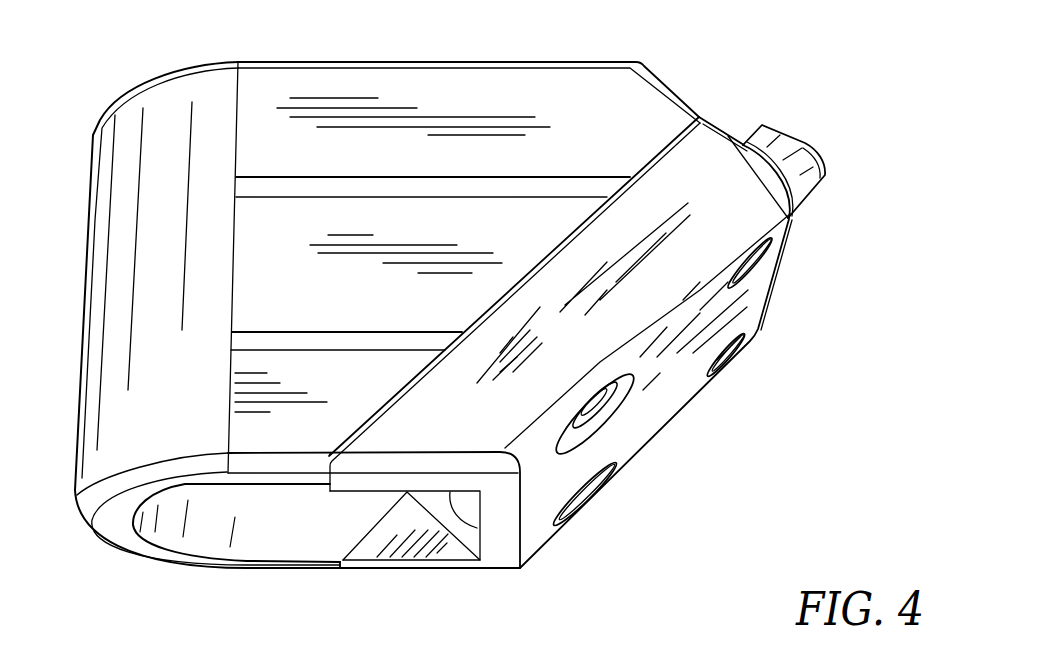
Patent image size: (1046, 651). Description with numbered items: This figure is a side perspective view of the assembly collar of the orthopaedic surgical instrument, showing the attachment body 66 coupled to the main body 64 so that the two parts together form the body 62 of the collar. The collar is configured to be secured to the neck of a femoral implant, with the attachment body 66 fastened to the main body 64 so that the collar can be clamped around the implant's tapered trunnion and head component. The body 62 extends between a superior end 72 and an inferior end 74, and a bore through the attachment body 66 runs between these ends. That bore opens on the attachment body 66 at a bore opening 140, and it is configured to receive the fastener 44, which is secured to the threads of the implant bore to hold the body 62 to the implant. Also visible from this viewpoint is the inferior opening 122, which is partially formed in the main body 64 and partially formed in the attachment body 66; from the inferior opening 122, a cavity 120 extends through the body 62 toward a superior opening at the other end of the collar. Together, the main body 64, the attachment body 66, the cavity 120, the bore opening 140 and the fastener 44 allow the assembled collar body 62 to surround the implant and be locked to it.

The superior end 72 is at (624, 50).
The main body 64 is at (102, 208).
The body 62 is at (110, 353).
The fastener 44 is at (772, 133).
The attachment body 66 is at (692, 243).
The bore opening 140 is at (479, 530).
The inferior end 74 is at (418, 580).
The inferior opening 122 is at (203, 522).
The cavity 120 is at (253, 540).